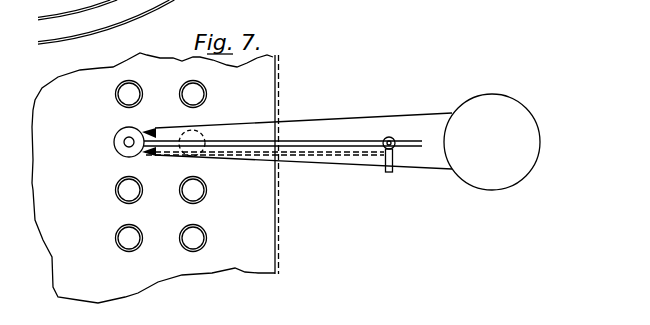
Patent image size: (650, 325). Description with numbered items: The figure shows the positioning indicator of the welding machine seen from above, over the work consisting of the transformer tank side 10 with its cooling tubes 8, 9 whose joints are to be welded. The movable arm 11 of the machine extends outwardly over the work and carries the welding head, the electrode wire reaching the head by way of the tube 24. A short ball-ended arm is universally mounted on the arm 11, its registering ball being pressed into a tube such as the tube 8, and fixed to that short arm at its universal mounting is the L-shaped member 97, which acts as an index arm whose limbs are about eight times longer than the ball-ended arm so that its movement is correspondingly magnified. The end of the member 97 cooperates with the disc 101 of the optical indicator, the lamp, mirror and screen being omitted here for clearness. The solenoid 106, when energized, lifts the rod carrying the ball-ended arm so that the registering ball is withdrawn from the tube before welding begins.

The transformer tank side 10 is at (81, 178).
The cooling tube 8 is at (120, 251).
The cooling tube 9 is at (207, 232).
The solenoid 106 is at (118, 136).
The arm 11 is at (340, 125).
The tube 24 is at (289, 145).
The L-shaped member 97 is at (339, 157).
The disc 101 is at (388, 136).